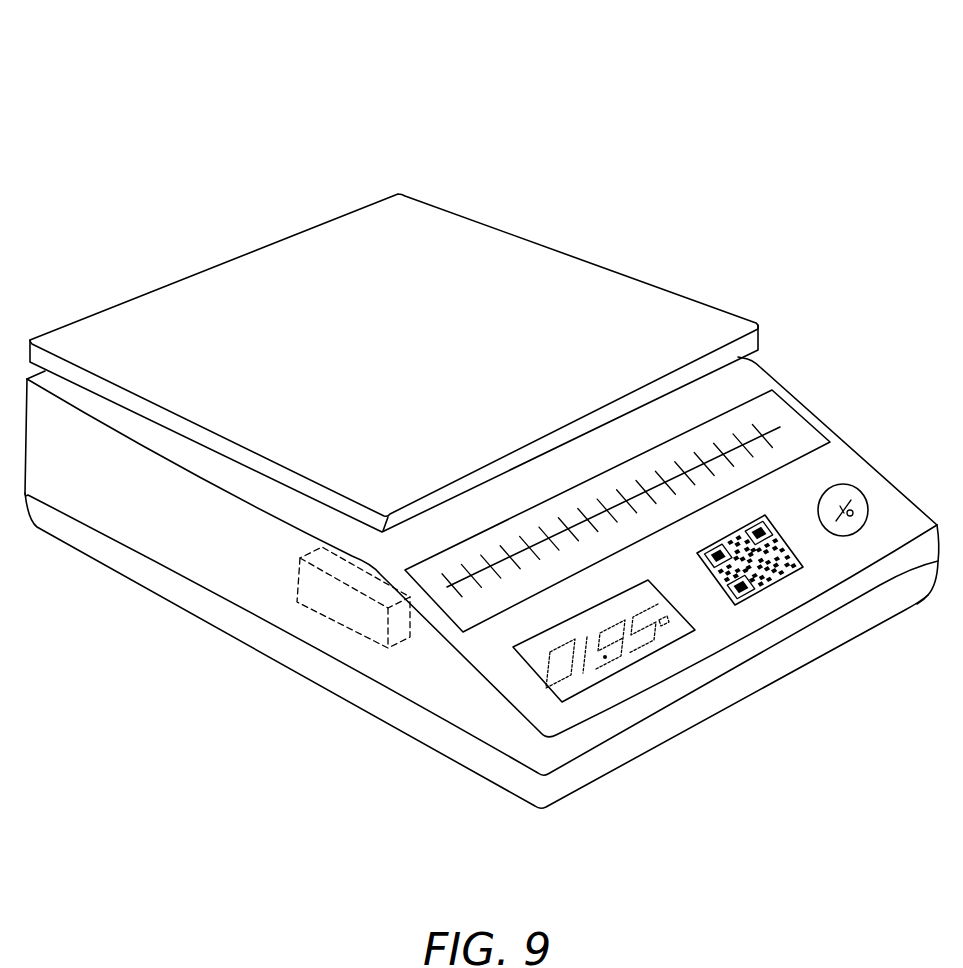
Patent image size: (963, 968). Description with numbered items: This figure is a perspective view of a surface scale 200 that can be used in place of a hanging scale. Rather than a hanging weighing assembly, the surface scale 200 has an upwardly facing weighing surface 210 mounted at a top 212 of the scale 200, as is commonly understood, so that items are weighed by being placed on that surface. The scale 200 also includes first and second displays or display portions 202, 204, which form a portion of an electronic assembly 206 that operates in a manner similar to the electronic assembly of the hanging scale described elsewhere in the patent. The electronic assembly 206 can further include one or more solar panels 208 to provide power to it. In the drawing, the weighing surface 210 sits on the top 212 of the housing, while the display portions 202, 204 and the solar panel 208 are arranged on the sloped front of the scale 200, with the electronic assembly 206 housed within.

The surface scale 200 is at (553, 128).
The first display portion 202 is at (587, 687).
The second display portion 204 is at (772, 585).
The electronic assembly 206 is at (335, 621).
The solar panel 208 is at (812, 423).
The weighing surface 210 is at (627, 304).
The top 212 is at (377, 549).